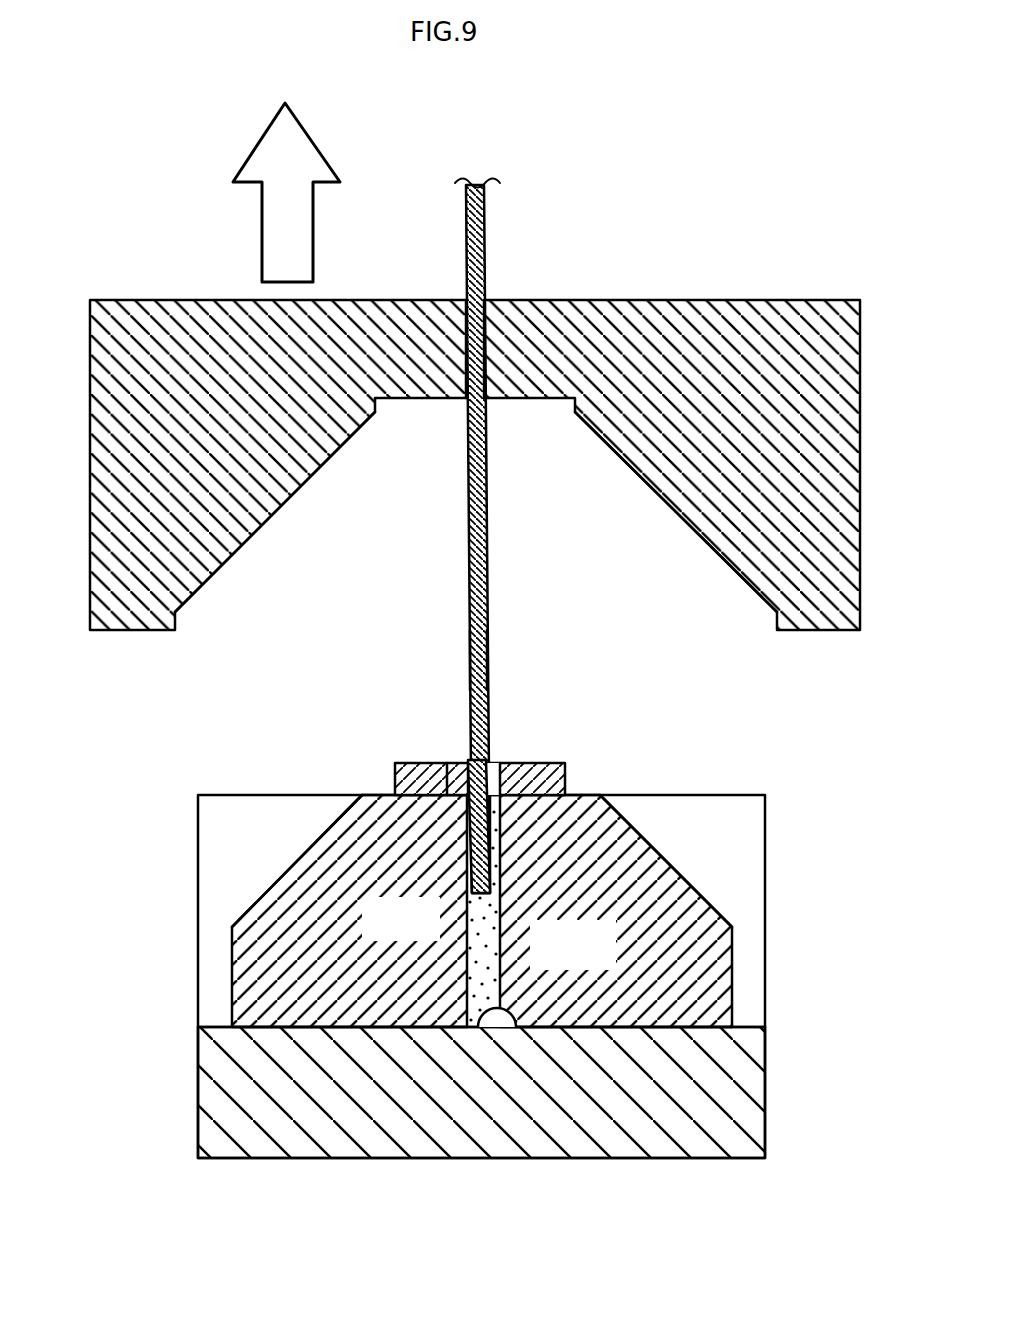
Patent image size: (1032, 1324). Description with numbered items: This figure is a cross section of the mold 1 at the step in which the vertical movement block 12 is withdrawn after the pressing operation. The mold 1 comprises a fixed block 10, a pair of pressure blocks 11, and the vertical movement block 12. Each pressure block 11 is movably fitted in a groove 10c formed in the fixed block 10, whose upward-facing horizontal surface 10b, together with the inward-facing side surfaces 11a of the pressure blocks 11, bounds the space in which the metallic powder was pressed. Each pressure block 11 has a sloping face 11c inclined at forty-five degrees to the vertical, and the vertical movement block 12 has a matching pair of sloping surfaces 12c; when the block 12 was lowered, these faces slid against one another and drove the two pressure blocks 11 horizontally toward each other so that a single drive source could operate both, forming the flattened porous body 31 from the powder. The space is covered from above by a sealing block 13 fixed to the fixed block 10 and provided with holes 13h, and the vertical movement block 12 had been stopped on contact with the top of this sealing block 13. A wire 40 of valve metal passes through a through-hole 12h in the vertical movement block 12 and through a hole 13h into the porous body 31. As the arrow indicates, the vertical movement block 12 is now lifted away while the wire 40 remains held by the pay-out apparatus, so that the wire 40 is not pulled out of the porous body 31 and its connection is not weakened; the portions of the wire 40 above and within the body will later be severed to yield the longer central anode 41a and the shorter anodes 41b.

The mold 1 is at (766, 222).
The fixed block 10 is at (635, 1150).
The horizontal surface 10b is at (523, 1030).
The groove 10c is at (765, 1027).
The pressure block 11 is at (248, 950).
The side surface 11a is at (478, 941).
The sloping face 11c is at (304, 855).
The vertical movement block 12 is at (678, 303).
The sloping surface 12c is at (660, 500).
The through-hole 12h is at (487, 343).
The sealing block 13 is at (410, 762).
The hole 13h is at (510, 762).
The porous body 31 is at (447, 763).
The wire 40 is at (466, 238).
The anode 41a is at (489, 681).
The anode 41b is at (565, 762).